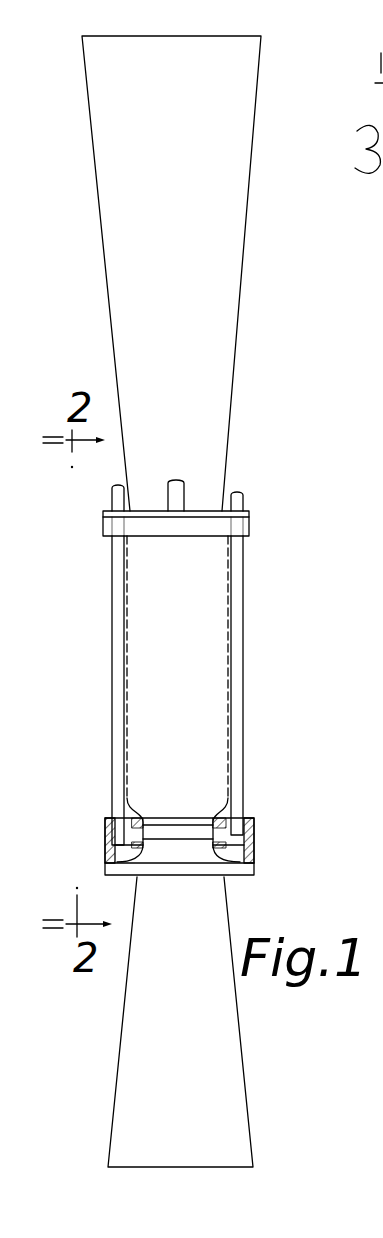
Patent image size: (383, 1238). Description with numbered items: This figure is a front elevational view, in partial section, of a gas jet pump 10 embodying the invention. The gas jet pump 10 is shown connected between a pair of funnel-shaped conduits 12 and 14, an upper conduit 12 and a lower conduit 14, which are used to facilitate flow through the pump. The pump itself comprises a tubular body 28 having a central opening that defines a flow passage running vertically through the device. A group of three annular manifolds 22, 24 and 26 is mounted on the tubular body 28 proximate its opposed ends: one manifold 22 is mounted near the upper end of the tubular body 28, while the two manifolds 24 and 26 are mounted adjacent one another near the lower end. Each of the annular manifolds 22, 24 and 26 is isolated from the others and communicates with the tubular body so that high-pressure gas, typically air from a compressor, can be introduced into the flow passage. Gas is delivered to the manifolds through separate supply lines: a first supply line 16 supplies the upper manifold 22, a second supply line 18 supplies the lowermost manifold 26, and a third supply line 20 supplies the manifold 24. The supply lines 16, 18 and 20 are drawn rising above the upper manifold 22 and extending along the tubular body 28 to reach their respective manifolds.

The gas jet pump 10 is at (270, 598).
The funnel-shaped conduit 12 is at (223, 297).
The funnel-shaped conduit 14 is at (137, 1087).
The first supply line 16 is at (174, 478).
The second supply line 18 is at (117, 500).
The third supply line 20 is at (232, 503).
The annular manifold 22 is at (107, 528).
The annular manifold 24 is at (247, 827).
The annular manifold 26 is at (252, 867).
The tubular body 28 is at (197, 650).